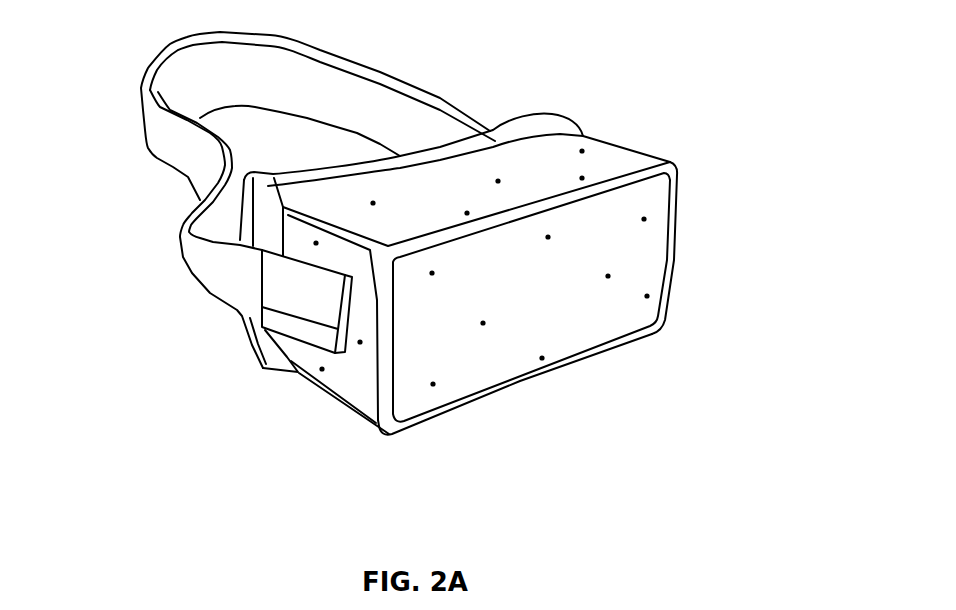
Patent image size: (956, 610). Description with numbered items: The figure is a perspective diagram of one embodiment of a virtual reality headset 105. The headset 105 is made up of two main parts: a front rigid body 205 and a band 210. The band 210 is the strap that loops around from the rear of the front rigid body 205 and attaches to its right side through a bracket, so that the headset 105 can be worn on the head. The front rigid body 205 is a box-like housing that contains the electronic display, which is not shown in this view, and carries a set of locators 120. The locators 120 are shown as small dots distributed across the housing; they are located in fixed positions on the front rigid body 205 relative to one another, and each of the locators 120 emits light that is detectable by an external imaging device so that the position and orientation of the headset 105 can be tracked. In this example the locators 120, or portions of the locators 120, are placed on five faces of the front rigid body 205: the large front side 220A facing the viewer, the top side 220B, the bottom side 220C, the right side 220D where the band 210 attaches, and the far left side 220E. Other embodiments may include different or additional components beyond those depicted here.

The virtual reality headset 105 is at (33, 30).
The band 210 is at (413, 88).
The front rigid body 205 is at (670, 163).
The front side 220A is at (422, 411).
The top side 220B is at (343, 204).
The bottom side 220C is at (316, 406).
The right side 220D is at (353, 378).
The left side 220E is at (648, 153).
The locators 120 is at (654, 294).